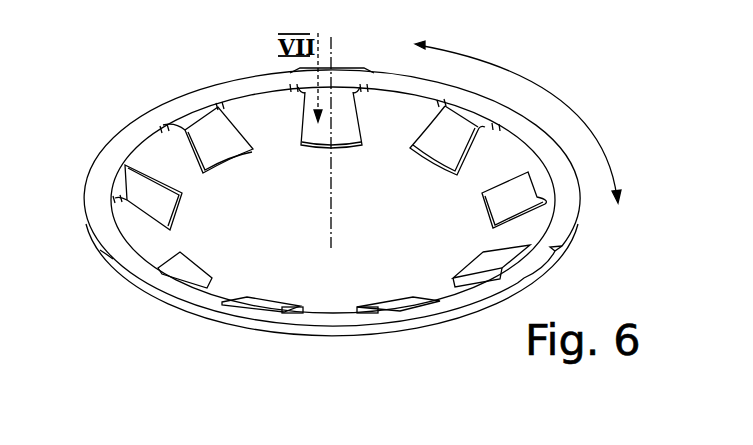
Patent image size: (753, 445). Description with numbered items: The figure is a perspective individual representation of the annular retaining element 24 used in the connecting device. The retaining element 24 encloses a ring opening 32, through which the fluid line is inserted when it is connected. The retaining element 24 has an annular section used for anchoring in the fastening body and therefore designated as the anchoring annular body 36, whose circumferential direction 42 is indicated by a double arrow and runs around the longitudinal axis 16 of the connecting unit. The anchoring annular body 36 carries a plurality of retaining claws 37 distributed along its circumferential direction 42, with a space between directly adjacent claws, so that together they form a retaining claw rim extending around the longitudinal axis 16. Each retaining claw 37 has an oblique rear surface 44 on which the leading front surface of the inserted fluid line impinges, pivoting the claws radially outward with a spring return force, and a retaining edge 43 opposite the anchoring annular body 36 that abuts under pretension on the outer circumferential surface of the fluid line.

The longitudinal axis 16 is at (332, 48).
The retaining element 24 is at (168, 307).
The ring opening 32 is at (324, 272).
The anchoring annular body 36 is at (568, 223).
The retaining claws 37 is at (170, 203).
The circumferential direction 42 is at (548, 94).
The retaining edge 43 is at (475, 216).
The oblique rear surface 44 is at (158, 182).